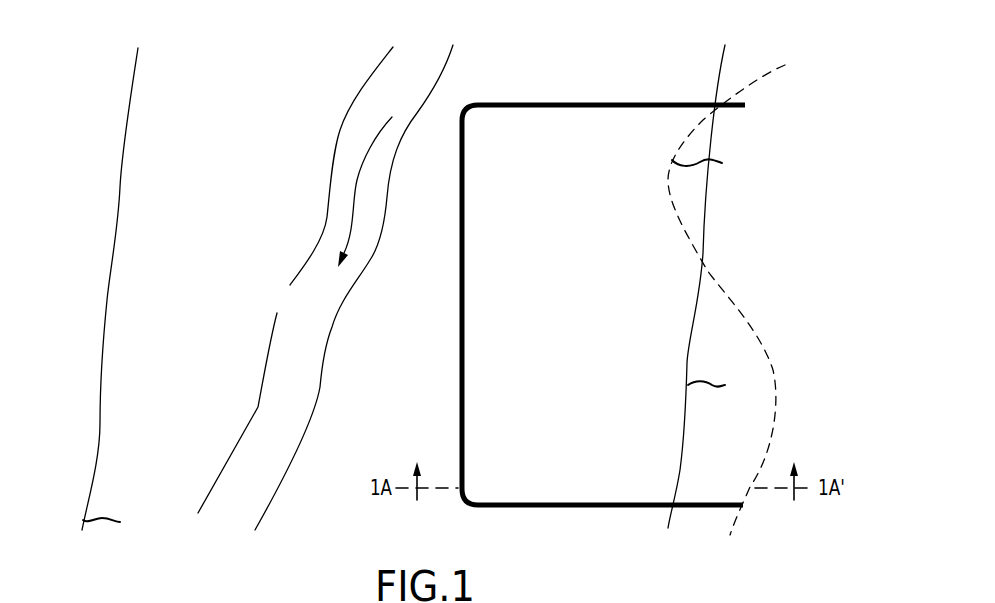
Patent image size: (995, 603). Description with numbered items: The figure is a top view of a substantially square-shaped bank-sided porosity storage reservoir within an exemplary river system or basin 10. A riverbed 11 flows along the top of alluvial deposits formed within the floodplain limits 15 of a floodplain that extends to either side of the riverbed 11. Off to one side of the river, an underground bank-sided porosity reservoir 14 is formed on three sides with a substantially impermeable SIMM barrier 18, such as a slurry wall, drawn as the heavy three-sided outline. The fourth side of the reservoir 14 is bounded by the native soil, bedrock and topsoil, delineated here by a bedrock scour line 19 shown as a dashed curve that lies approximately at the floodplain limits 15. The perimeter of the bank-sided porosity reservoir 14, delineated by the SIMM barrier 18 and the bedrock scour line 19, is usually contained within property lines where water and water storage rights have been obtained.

The basin 10 is at (242, 57).
The riverbed 11 is at (262, 412).
The bank-sided porosity reservoir 14 is at (574, 305).
The floodplain limits 15 is at (120, 187).
The substantially impermeable SIMM barrier 18 is at (462, 350).
The bedrock scour line 19 is at (748, 316).